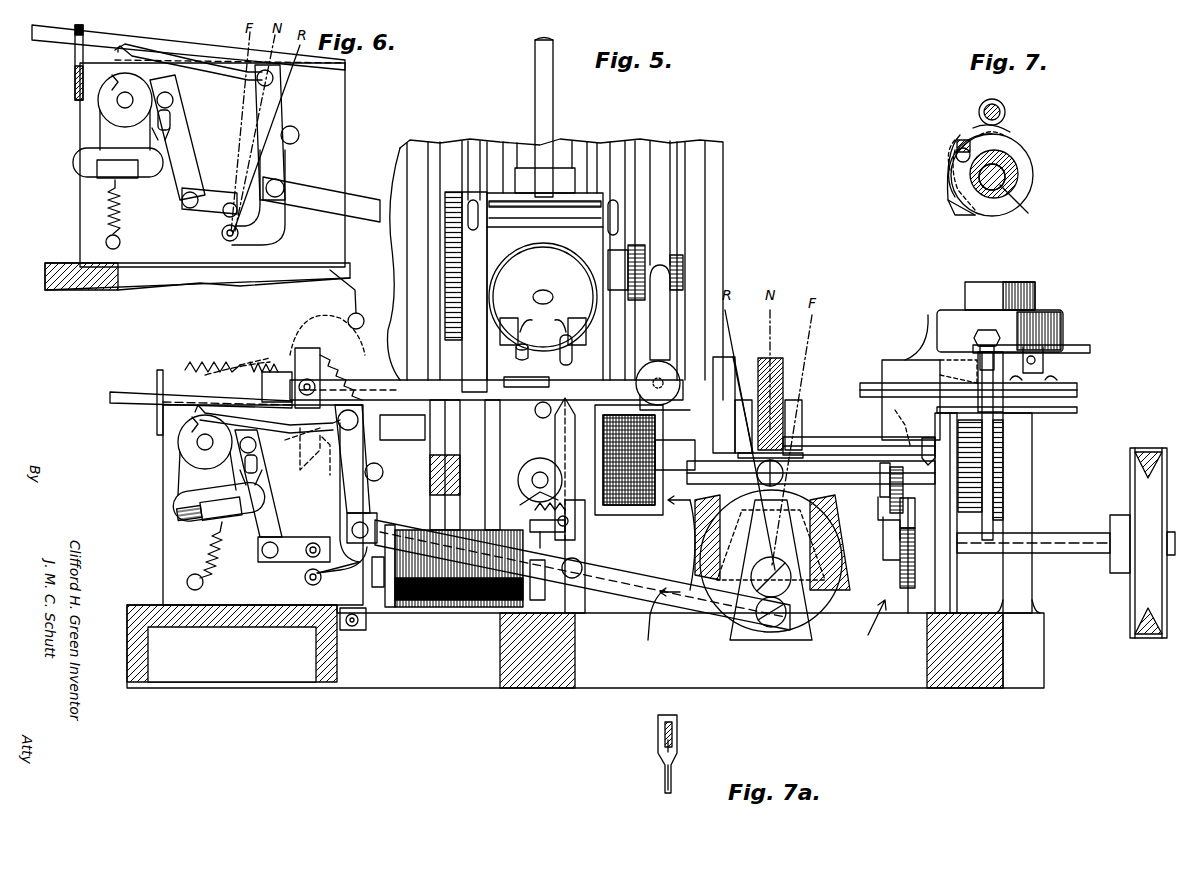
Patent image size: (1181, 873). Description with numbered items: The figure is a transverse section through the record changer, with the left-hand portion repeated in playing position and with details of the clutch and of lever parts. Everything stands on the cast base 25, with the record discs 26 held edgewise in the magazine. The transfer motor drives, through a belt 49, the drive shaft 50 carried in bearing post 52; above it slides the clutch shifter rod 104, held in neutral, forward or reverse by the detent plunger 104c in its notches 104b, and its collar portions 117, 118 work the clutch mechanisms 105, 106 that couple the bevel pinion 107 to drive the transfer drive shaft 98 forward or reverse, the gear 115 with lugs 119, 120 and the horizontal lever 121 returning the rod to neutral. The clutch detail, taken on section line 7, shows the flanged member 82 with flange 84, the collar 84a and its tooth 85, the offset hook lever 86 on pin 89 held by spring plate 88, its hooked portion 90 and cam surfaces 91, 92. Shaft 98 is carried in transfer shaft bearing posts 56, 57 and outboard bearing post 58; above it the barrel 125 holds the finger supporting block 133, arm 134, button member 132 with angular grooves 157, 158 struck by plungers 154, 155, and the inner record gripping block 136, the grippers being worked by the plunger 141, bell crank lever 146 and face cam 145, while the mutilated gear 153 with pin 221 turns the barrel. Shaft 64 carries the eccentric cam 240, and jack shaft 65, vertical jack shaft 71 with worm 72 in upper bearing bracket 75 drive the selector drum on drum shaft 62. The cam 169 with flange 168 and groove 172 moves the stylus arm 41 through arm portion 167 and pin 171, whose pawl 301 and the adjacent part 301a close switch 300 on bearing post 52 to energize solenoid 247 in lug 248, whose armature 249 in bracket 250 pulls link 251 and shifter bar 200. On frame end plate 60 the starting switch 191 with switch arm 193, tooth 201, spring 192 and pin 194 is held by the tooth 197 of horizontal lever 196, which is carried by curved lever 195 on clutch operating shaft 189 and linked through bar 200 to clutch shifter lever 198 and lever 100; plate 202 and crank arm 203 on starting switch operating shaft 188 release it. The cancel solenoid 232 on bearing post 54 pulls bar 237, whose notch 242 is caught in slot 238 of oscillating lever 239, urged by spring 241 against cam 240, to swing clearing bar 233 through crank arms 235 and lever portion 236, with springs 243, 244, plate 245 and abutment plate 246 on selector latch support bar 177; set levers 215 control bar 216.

In FIG. 5, the section line 7 is at (677, 547).
In FIG. 5, the base 25 is at (562, 690).
In FIG. 5, the record discs 26 is at (648, 175).
In FIG. 5, the stylus arm 41 is at (1038, 295).
In FIG. 5, the belt 49 is at (1142, 448).
In FIG. 5, the drive shaft 50 is at (1065, 533).
In FIG. 7, the drive shaft 50 is at (1005, 180).
In FIG. 5, the bearing post 52 is at (948, 452).
In FIG. 5, the bearing post 54 is at (542, 467).
In FIG. 5, the transfer shaft bearing post 56 is at (474, 292).
In FIG. 5, the transfer shaft bearing post 57 is at (643, 272).
In FIG. 5, the outboard bearing post 58 is at (1025, 478).
In FIG. 6, the frame end plate 60 is at (345, 128).
In FIG. 5, the frame end plate 60 is at (170, 484).
In FIG. 6, the drum shaft 62 is at (298, 127).
In FIG. 5, the drum shaft 62 is at (380, 470).
In FIG. 5, the rotatable shaft 64 is at (535, 501).
In FIG. 5, the jack shaft 65 is at (535, 410).
In FIG. 5, the vertical jack shaft 71 is at (455, 505).
In FIG. 5, the worm 72 is at (455, 465).
In FIG. 5, the upper bearing bracket 75 is at (425, 428).
In FIG. 5, the flanged member 82 is at (914, 595).
In FIG. 7, the flange 84 is at (1028, 140).
In FIG. 7, the collar 84a is at (1027, 206).
In FIG. 7, the tooth 85 is at (1018, 165).
In FIG. 5, the offset hook lever 86 is at (908, 592).
In FIG. 7, the offset hook lever 86 is at (950, 195).
In FIG. 5, the spring plate 88 is at (915, 545).
In FIG. 7, the spring plate 88 is at (952, 160).
In FIG. 5, the pin 89 is at (884, 540).
In FIG. 7, the pin 89 is at (958, 148).
In FIG. 7, the hooked portion 90 is at (968, 215).
In FIG. 7, the cam surface 91 is at (955, 210).
In FIG. 5, the cam surface 92 is at (881, 518).
In FIG. 7, the cam surface 92 is at (975, 126).
In FIG. 5, the transfer drive shaft 98 is at (707, 465).
In FIG. 5, the lever 100 is at (568, 548).
In FIG. 5, the clutch shifter rod 104 is at (811, 472).
In FIG. 7, the clutch shifter rod 104 is at (1006, 112).
In FIG. 5, the notches 104b is at (904, 417).
In FIG. 5, the detent plunger 104c is at (920, 450).
In FIG. 5, the clutch mechanism 105 is at (865, 625).
In FIG. 5, the clutch mechanism 106 is at (646, 621).
In FIG. 5, the bevel pinion 107 is at (772, 565).
In FIG. 5, the gear 115 is at (785, 375).
In FIG. 5, the flange collar portion 117 is at (876, 488).
In FIG. 7, the flange collar portion 117 is at (1004, 102).
In FIG. 5, the flange collar portion 118 is at (675, 470).
In FIG. 5, the lug 119 is at (795, 430).
In FIG. 5, the lug 120 is at (755, 448).
In FIG. 5, the horizontal lever 121 is at (790, 460).
In FIG. 5, the barrel 125 is at (545, 303).
In FIG. 5, the button member 132 is at (543, 297).
In FIG. 5, the finger supporting block 133 is at (590, 200).
In FIG. 5, the arm 134 is at (535, 107).
In FIG. 5, the inner record gripping block 136 is at (562, 170).
In FIG. 5, the plunger 141 is at (632, 258).
In FIG. 5, the face cam 145 is at (735, 360).
In FIG. 5, the bell crank lever 146 is at (660, 300).
In FIG. 5, the mutilated gear 153 is at (445, 237).
In FIG. 5, the plunger 154 is at (507, 352).
In FIG. 5, the plunger 155 is at (581, 350).
In FIG. 5, the angular groove 157 is at (506, 316).
In FIG. 5, the angular groove 158 is at (576, 316).
In FIG. 5, the arm portion 167 is at (1072, 345).
In FIG. 5, the flange 168 is at (1000, 432).
In FIG. 5, the cam 169 is at (890, 360).
In FIG. 5, the pin 171 is at (980, 350).
In FIG. 5, the groove 172 is at (1003, 458).
In FIG. 5, the selector latch support bar 177 is at (270, 388).
In FIG. 6, the starting switch operating shaft 188 is at (225, 216).
In FIG. 5, the starting switch operating shaft 188 is at (313, 542).
In FIG. 6, the clutch operating shaft 189 is at (224, 240).
In FIG. 5, the clutch operating shaft 189 is at (310, 585).
In FIG. 6, the motor starting switch 191 is at (78, 170).
In FIG. 5, the motor starting switch 191 is at (175, 520).
In FIG. 6, the spring 192 is at (122, 222).
In FIG. 5, the spring 192 is at (218, 550).
In FIG. 6, the switch arm 193 is at (105, 130).
In FIG. 5, the switch arm 193 is at (200, 472).
In FIG. 5, the pin 194 is at (203, 588).
In FIG. 6, the curved lever 195 is at (275, 102).
In FIG. 5, the curved lever 195 is at (358, 450).
In FIG. 6, the horizontal lever 196 is at (188, 45).
In FIG. 5, the horizontal lever 196 is at (232, 403).
In FIG. 5, the tooth 197 is at (200, 398).
In FIG. 5, the clutch shifter lever 198 is at (786, 618).
In FIG. 6, the shifter bar 200 is at (315, 208).
In FIG. 5, the shifter bar 200 is at (690, 600).
In FIG. 6, the tooth 201 is at (75, 62).
In FIG. 5, the tooth 201 is at (180, 420).
In FIG. 6, the plate 202 is at (185, 160).
In FIG. 5, the plate 202 is at (270, 505).
In FIG. 6, the crank arm 203 is at (208, 196).
In FIG. 5, the crank arm 203 is at (285, 570).
In FIG. 5, the set levers 215 is at (348, 299).
In FIG. 5, the bar 216 is at (392, 388).
In FIG. 5, the pin 221 is at (440, 200).
In FIG. 5, the solenoid 232 is at (660, 432).
In FIG. 5, the clearing bar 233 is at (316, 451).
In FIG. 5, the crank arms 235 is at (295, 444).
In FIG. 5, the lever portion 236 is at (303, 355).
In FIG. 5, the bar 237 is at (490, 388).
In FIG. 7A, the bar 237 is at (680, 722).
In FIG. 7A, the slot 238 is at (678, 742).
In FIG. 5, the oscillating lever 239 is at (546, 469).
In FIG. 7A, the oscillating lever 239 is at (664, 775).
In FIG. 5, the eccentric cam 240 is at (522, 463).
In FIG. 5, the spring 241 is at (548, 533).
In FIG. 5, the notch 242 is at (526, 386).
In FIG. 7A, the notch 242 is at (664, 742).
In FIG. 5, the spring 243 is at (312, 350).
In FIG. 6, the spring 244 is at (75, 85).
In FIG. 5, the spring 244 is at (213, 358).
In FIG. 5, the plate 245 is at (156, 384).
In FIG. 5, the abutment plate 246 is at (275, 360).
In FIG. 5, the solenoid 247 is at (460, 608).
In FIG. 5, the lug 248 is at (592, 610).
In FIG. 5, the armature 249 is at (370, 605).
In FIG. 5, the bracket 250 is at (345, 632).
In FIG. 5, the link 251 is at (375, 525).
In FIG. 5, the switch 300 is at (910, 380).
In FIG. 5, the pawl 301 is at (1045, 368).
In FIG. 5, the wire 301a is at (913, 326).